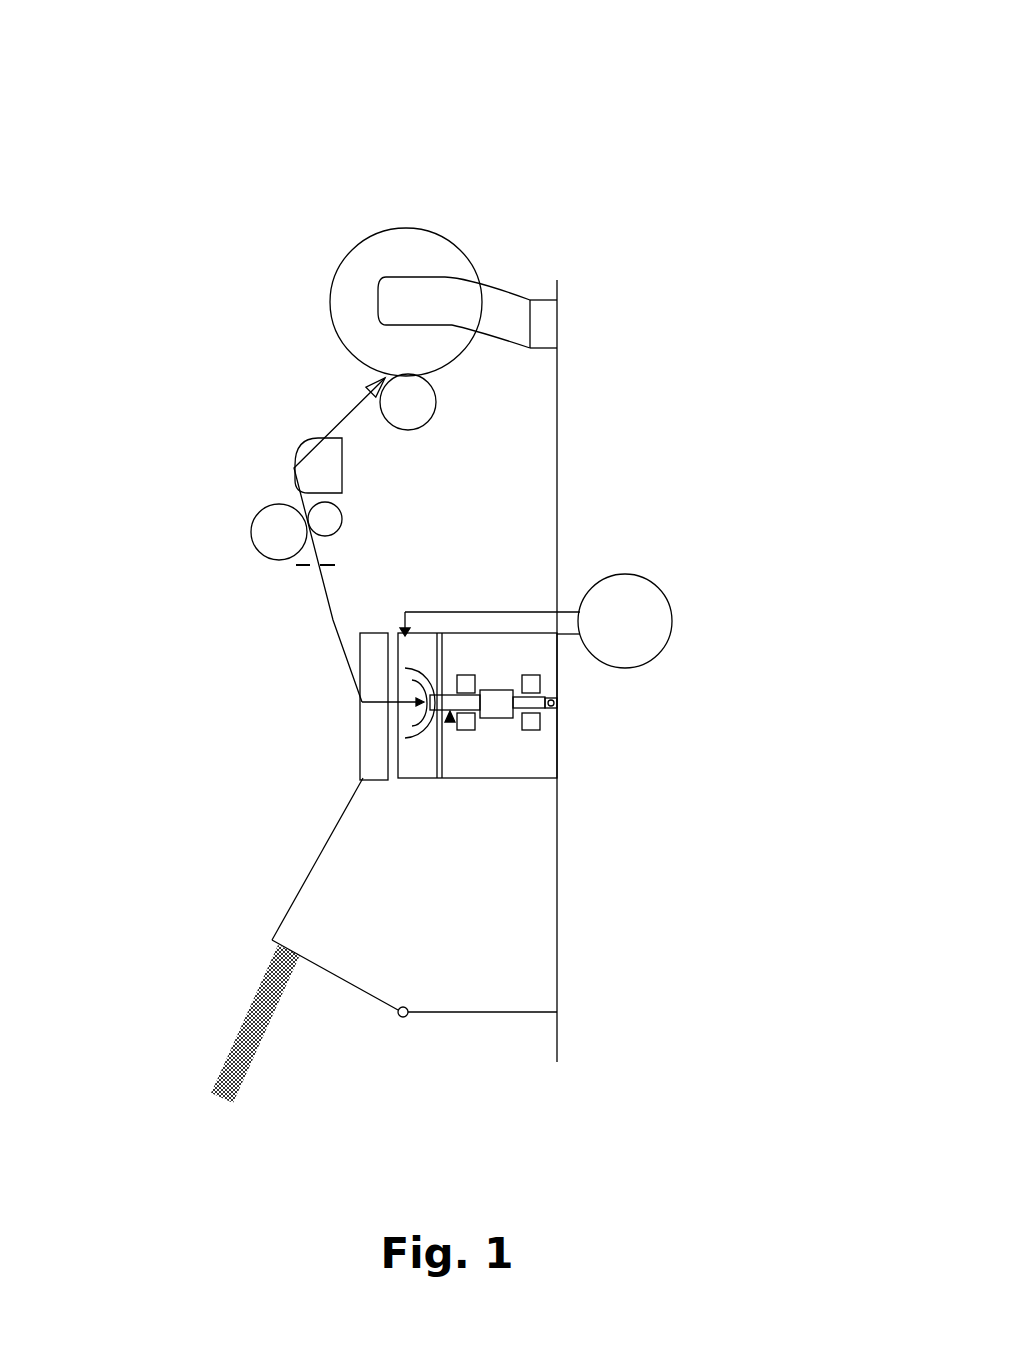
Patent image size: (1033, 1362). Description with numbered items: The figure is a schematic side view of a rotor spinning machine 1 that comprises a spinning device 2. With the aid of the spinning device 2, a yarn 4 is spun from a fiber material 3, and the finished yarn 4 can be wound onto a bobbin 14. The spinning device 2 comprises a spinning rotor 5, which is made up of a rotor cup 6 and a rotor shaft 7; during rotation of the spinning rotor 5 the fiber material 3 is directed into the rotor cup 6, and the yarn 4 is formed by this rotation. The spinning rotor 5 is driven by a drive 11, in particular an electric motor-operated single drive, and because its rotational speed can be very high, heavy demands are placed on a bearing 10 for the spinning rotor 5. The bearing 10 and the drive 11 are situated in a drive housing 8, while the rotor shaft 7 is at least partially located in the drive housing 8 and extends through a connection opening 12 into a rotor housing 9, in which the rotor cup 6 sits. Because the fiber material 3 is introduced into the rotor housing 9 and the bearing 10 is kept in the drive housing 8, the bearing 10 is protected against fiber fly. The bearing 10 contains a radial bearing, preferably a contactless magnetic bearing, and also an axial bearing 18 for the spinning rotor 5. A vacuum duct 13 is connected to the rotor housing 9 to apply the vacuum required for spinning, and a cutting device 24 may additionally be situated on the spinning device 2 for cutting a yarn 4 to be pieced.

The rotor spinning machine 1 is at (220, 140).
The spinning device 2 is at (270, 692).
The fiber material 3 is at (199, 1019).
The yarn 4 is at (292, 517).
The spinning rotor 5 is at (450, 716).
The rotor cup 6 is at (319, 733).
The rotor shaft 7 is at (533, 705).
The drive housing 8 is at (562, 749).
The rotor housing 9 is at (322, 744).
The bearing 10 is at (610, 750).
The drive 11 is at (561, 585).
The connection opening 12 is at (538, 547).
The vacuum duct 13 is at (540, 580).
The bobbin 14 is at (443, 279).
The axial bearing 18 is at (673, 732).
The cutting device 24 is at (251, 609).